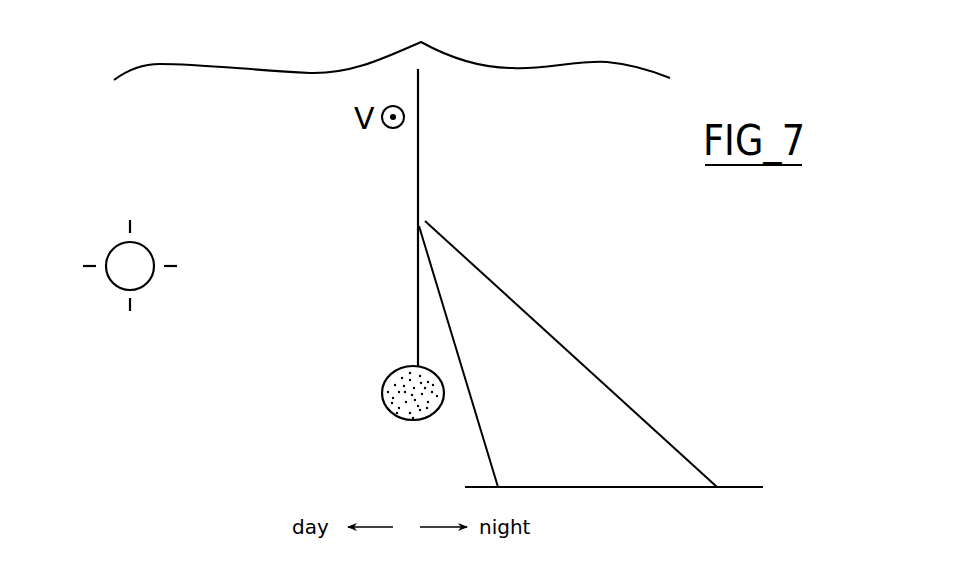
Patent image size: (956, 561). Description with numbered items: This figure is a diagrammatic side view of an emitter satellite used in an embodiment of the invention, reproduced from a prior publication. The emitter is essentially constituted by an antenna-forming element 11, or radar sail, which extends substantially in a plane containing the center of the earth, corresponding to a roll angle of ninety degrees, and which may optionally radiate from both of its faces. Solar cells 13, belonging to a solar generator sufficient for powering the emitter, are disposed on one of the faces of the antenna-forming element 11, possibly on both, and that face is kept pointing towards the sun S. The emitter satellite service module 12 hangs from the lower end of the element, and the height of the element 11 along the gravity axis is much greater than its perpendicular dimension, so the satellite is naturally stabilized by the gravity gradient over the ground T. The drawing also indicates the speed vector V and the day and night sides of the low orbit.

The antenna-forming element 11 is at (426, 151).
The emitter satellite service module 12 is at (381, 404).
The solar cells 13 is at (409, 190).
The sun S is at (104, 281).
The bottom / terrain T is at (742, 477).